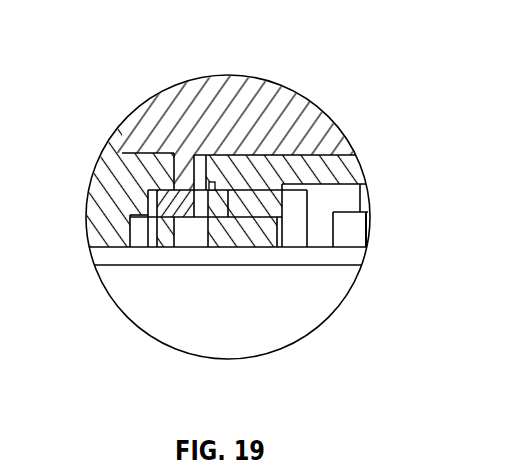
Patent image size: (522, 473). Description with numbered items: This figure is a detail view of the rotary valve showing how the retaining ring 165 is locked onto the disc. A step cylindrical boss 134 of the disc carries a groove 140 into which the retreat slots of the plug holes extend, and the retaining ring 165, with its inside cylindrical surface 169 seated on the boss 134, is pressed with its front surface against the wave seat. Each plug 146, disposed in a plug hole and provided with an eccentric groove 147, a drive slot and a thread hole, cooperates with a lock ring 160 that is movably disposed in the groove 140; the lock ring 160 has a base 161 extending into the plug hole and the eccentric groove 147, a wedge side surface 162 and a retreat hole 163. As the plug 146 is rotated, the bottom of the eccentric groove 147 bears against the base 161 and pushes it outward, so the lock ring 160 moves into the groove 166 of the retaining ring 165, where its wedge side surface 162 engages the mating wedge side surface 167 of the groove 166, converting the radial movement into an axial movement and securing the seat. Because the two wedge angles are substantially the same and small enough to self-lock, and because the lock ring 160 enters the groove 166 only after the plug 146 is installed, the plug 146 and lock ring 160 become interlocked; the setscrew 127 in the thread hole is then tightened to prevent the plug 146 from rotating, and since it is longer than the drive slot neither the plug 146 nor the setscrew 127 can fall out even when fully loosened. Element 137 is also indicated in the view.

The setscrew 127 is at (284, 303).
The step cylindrical boss 134 is at (228, 112).
The housing wall 137 is at (180, 84).
The groove 140 is at (212, 306).
The plug 146 is at (269, 137).
The eccentric groove 147 is at (329, 284).
The lock ring 160 is at (123, 280).
The base 161 is at (277, 137).
The wedge side surface 162 is at (80, 110).
The retreat hole 163 is at (140, 298).
The retaining ring 165 is at (157, 267).
The groove 166 is at (152, 201).
The wedge side surface 167 is at (122, 153).
The inside cylindrical surface 169 is at (115, 107).